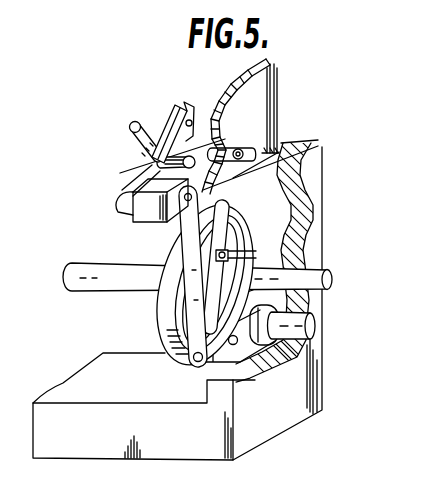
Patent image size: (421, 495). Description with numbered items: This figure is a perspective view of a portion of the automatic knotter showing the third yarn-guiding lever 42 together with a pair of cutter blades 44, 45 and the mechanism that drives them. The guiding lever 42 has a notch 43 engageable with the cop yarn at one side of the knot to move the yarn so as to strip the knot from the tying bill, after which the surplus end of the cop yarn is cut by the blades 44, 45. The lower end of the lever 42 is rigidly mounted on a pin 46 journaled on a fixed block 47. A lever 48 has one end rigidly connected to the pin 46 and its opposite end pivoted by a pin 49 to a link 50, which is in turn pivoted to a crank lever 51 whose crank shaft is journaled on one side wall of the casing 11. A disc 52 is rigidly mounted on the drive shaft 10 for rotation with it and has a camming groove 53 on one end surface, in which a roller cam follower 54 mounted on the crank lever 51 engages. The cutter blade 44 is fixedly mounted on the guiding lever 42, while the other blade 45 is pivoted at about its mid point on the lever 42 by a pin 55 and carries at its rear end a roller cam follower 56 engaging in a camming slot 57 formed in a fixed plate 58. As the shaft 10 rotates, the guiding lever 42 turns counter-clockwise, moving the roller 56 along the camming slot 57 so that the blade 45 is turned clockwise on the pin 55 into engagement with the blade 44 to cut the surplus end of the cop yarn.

The drive shaft 10 is at (332, 266).
The casing 11 is at (296, 430).
The third guiding lever 42 is at (176, 106).
The notch 43 is at (172, 114).
The cutter blade 44 is at (190, 112).
The cutter blade 45 is at (150, 130).
The pin 46 is at (300, 175).
The fixed block 47 is at (142, 212).
The lever 48 is at (180, 292).
The pin 49 is at (252, 212).
The link 50 is at (172, 327).
The crank lever 51 is at (313, 326).
The disc 52 is at (165, 242).
The camming groove 53 is at (262, 245).
The roller cam follower 54 is at (252, 358).
The pin 55 is at (162, 163).
The roller cam follower 56 is at (241, 146).
The camming slot 57 is at (262, 150).
The fixed plate 58 is at (274, 76).